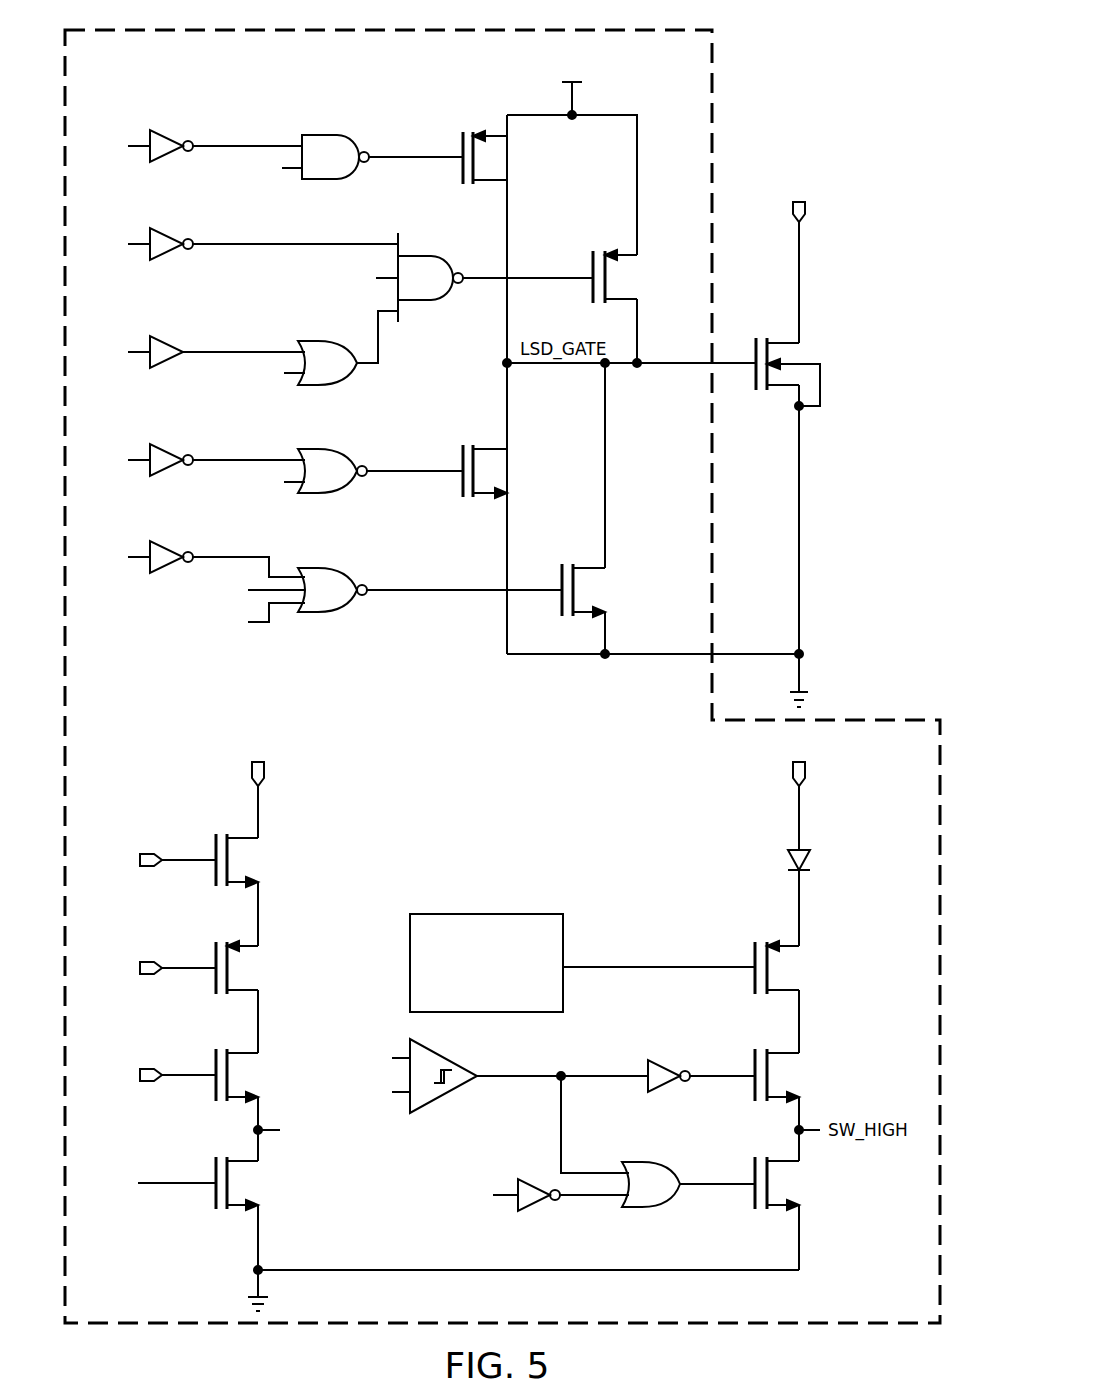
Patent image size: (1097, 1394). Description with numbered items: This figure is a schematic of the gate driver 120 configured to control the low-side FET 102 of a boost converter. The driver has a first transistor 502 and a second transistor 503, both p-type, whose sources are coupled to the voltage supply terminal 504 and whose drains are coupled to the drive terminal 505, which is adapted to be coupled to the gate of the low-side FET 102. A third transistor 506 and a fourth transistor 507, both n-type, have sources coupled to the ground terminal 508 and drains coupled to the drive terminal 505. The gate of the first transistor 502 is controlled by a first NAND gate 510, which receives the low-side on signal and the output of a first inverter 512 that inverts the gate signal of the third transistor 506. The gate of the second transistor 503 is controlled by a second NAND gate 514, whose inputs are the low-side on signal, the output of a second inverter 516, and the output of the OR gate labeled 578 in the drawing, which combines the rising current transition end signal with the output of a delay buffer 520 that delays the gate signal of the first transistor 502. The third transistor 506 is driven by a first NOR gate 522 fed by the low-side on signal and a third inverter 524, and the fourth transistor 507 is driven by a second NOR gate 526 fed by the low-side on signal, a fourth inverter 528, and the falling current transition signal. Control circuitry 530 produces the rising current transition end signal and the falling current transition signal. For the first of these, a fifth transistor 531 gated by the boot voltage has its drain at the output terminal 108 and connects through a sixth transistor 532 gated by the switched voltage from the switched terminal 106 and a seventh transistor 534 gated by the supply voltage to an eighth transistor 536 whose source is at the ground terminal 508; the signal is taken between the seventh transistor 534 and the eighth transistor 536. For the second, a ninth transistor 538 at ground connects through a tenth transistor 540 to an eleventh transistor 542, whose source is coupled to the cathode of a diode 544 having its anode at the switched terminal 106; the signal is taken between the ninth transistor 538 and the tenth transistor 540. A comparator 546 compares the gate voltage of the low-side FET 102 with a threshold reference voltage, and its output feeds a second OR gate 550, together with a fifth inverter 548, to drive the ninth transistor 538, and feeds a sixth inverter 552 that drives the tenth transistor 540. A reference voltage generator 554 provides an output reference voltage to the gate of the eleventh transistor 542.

The gate driver 120 is at (796, 62).
The low-side FET 102 is at (752, 354).
The switched terminal 106 is at (808, 208).
The output terminal 108 is at (252, 770).
The first transistor 502 is at (460, 148).
The second transistor 503 is at (590, 284).
The voltage supply terminal 504 is at (578, 112).
The drive terminal 505 is at (608, 366).
The third transistor 506 is at (460, 480).
The fourth transistor 507 is at (560, 578).
The ground terminal 508 is at (797, 652).
The first NAND gate 510 is at (323, 134).
The first inverter 512 is at (170, 134).
The second NAND gate 514 is at (420, 254).
The second inverter 516 is at (170, 232).
The delay buffer 520 is at (170, 340).
The first NOR gate 522 is at (312, 447).
The third inverter 524 is at (170, 448).
The second NOR gate 526 is at (320, 566).
The fourth inverter 528 is at (170, 545).
The control circuitry 530 is at (186, 720).
The fifth transistor 531 is at (212, 848).
The sixth transistor 532 is at (212, 956).
The seventh transistor 534 is at (212, 1062).
The eighth transistor 536 is at (212, 1172).
The ninth transistor 538 is at (750, 1172).
The tenth transistor 540 is at (750, 1062).
The eleventh transistor 542 is at (750, 977).
The diode 544 is at (790, 858).
The comparator 546 is at (445, 1098).
The fifth inverter 548 is at (535, 1205).
The second OR gate 550 is at (648, 1208).
The sixth inverter 552 is at (665, 1092).
The reference voltage generator 554 is at (485, 912).
The OR gate 578 is at (345, 386).